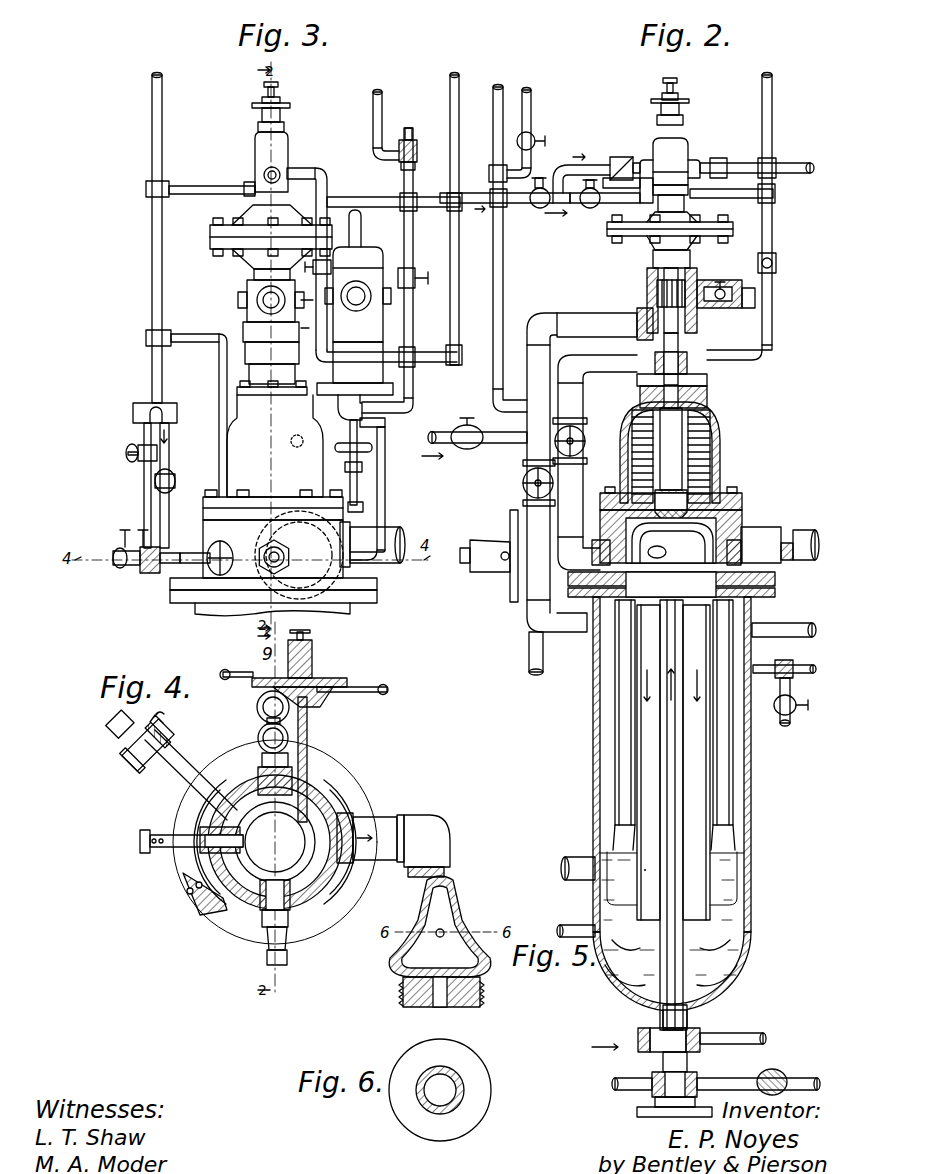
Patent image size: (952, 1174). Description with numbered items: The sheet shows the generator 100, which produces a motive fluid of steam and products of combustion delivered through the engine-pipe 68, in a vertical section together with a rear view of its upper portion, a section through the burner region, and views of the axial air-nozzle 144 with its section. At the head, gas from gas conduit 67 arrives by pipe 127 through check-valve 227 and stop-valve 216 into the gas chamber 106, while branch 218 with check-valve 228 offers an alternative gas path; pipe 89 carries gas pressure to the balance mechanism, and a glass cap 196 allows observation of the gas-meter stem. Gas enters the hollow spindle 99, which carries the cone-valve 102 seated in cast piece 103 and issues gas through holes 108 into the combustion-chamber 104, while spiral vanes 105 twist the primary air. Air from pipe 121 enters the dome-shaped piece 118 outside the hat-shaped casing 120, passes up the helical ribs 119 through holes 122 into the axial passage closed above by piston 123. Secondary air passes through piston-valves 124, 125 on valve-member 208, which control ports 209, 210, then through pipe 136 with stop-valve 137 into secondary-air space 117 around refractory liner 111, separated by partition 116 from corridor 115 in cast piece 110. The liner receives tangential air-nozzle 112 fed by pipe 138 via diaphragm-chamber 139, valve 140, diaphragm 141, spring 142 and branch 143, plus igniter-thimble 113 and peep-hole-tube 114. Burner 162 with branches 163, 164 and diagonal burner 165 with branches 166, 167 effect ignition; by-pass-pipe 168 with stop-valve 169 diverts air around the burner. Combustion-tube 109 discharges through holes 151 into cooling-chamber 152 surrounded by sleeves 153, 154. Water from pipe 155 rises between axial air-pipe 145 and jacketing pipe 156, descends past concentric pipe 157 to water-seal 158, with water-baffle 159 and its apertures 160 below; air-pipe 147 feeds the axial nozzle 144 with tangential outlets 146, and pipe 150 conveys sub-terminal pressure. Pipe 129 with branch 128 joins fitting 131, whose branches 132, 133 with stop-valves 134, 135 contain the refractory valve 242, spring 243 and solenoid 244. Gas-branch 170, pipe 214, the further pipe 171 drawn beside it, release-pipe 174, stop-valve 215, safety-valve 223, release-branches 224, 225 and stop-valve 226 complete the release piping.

In FIG. 2, the gas conduit 67 is at (490, 192).
In FIG. 2, the engine-pipe 68 is at (813, 560).
In FIG. 4, the engine-pipe 68 is at (440, 850).
In FIG. 2, the pressure pipe 89 is at (776, 194).
In FIG. 2, the hollow spindle 99 is at (674, 438).
In FIG. 2, the generator 100 is at (600, 723).
In FIG. 2, the cone-valve 102 is at (717, 485).
In FIG. 2, the cast piece 103 is at (630, 497).
In FIG. 2, the combustion-chamber 104 is at (727, 517).
In FIG. 4, the combustion-chamber 104 is at (275, 842).
In FIG. 2, the spiral vanes 105 is at (733, 505).
In FIG. 2, the gas chamber 106 is at (662, 150).
In FIG. 2, the gas holes 108 is at (678, 525).
In FIG. 2, the combustion-tube 109 is at (750, 660).
In FIG. 2, the cast piece 110 is at (777, 592).
In FIG. 4, the cast piece 110 is at (333, 787).
In FIG. 2, the refractory liner 111 is at (630, 637).
In FIG. 4, the refractory liner 111 is at (330, 810).
In FIG. 4, the tangential air-nozzle 112 is at (333, 777).
In FIG. 4, the igniter-thimble 113 is at (197, 857).
In FIG. 2, the peep-hole-tube 114 is at (797, 540).
In FIG. 4, the peep-hole-tube 114 is at (300, 948).
In FIG. 2, the corridor 115 is at (745, 555).
In FIG. 4, the corridor 115 is at (310, 880).
In FIG. 4, the partition 116 is at (323, 850).
In FIG. 2, the secondary-air space 117 is at (587, 547).
In FIG. 4, the secondary-air space 117 is at (310, 883).
In FIG. 3, the dome-shaped piece 118 is at (247, 433).
In FIG. 2, the dome-shaped piece 118 is at (748, 426).
In FIG. 2, the helical ribs 119 is at (720, 466).
In FIG. 2, the hat-shaped casing 120 is at (717, 446).
In FIG. 2, the air pipe 121 is at (493, 442).
In FIG. 2, the holes 122 is at (687, 418).
In FIG. 2, the piston 123 is at (693, 395).
In FIG. 2, the secondary-air piston-valve 124 is at (676, 352).
In FIG. 2, the by-pass air piston-valve 125 is at (657, 290).
In FIG. 2, the gas pipe 127 is at (613, 168).
In FIG. 3, the terminal-pressure pipe 128 is at (206, 192).
In FIG. 2, the terminal-pressure pipe 128 is at (608, 190).
In FIG. 3, the terminal pipe 129 is at (152, 247).
In FIG. 3, the fitting 131 is at (133, 413).
In FIG. 3, the branch pipe 132 is at (170, 460).
In FIG. 4, the branch pipe 132 is at (167, 740).
In FIG. 3, the branch pipe 133 is at (145, 483).
In FIG. 4, the branch pipe 133 is at (185, 767).
In FIG. 3, the stop-valve 134 is at (175, 480).
In FIG. 3, the stop-valve 135 is at (126, 453).
In FIG. 2, the secondary-air pipe 136 is at (607, 337).
In FIG. 2, the stop-valve 137 is at (588, 441).
In FIG. 3, the tangential-air pipe 138 is at (385, 478).
In FIG. 4, the tangential-air pipe 138 is at (360, 687).
In FIG. 4, the diaphragm-chamber 139 is at (312, 690).
In FIG. 4, the valve 140 is at (313, 705).
In FIG. 4, the diaphragm 141 is at (317, 673).
In FIG. 4, the spring 142 is at (247, 671).
In FIG. 3, the branch 143 is at (205, 332).
In FIG. 4, the branch 143 is at (313, 653).
In FIG. 2, the refractory nozzle 144 is at (612, 635).
In FIG. 5, the refractory nozzle 144 is at (460, 917).
In FIG. 6, the refractory nozzle 144 is at (447, 1050).
In FIG. 2, the axial air-pipe 145 is at (676, 783).
In FIG. 5, the tangential air-outlets 146 is at (446, 938).
In FIG. 6, the tangential air-outlets 146 is at (423, 1100).
In FIG. 2, the air-pipe 147 is at (597, 1043).
In FIG. 2, the sub-terminal pressure pipe 150 is at (530, 651).
In FIG. 2, the holes 151 is at (632, 898).
In FIG. 2, the cooling-chamber 152 is at (720, 1002).
In FIG. 2, the outer sleeve 153 is at (733, 745).
In FIG. 2, the inner sleeve 154 is at (733, 767).
In FIG. 2, the water pipe 155 is at (722, 1080).
In FIG. 2, the jacketing pipe 156 is at (660, 782).
In FIG. 2, the concentric pipe 157 is at (657, 742).
In FIG. 2, the water-seal 158 is at (610, 915).
In FIG. 2, the water-baffle 159 is at (593, 960).
In FIG. 2, the apertures 160 is at (620, 983).
In FIG. 4, the burner 162 is at (173, 853).
In FIG. 4, the air branch 163 is at (140, 838).
In FIG. 4, the gas branch 164 is at (160, 833).
In FIG. 4, the diagonal burner 165 is at (237, 897).
In FIG. 4, the branch 166 is at (190, 888).
In FIG. 4, the branch 167 is at (213, 873).
In FIG. 2, the by-pass-pipe 168 is at (527, 523).
In FIG. 2, the stop-valve 169 is at (523, 483).
In FIG. 3, the gas-branch 170 is at (347, 199).
In FIG. 3, the pipe 171 is at (413, 241).
In FIG. 2, the pipe 171 is at (503, 295).
In FIG. 3, the release-pipe 174 is at (453, 122).
In FIG. 2, the glass cap 196 is at (732, 232).
In FIG. 2, the valve-member 208 is at (650, 332).
In FIG. 2, the secondary air-ports 209 is at (703, 370).
In FIG. 2, the by-pass air-ports 210 is at (705, 324).
In FIG. 2, the release pipe 214 is at (618, 190).
In FIG. 3, the stop-valve 215 is at (457, 365).
In FIG. 2, the stop-valve 215 is at (458, 366).
In FIG. 2, the stop-valve 216 is at (536, 210).
In FIG. 3, the gas branch 218 is at (426, 352).
In FIG. 2, the gas branch 218 is at (773, 307).
In FIG. 3, the safety-valve 223 is at (401, 134).
In FIG. 3, the release-branch 224 is at (373, 118).
In FIG. 2, the release-branch 224 is at (503, 90).
In FIG. 2, the release-branch 225 is at (531, 96).
In FIG. 2, the stop-valve 226 is at (538, 134).
In FIG. 2, the check-valve 227 is at (625, 157).
In FIG. 2, the check-valve 228 is at (718, 160).
In FIG. 4, the refractory by-pass valve 242 is at (152, 760).
In FIG. 4, the spring 243 is at (140, 753).
In FIG. 4, the solenoid 244 is at (116, 728).